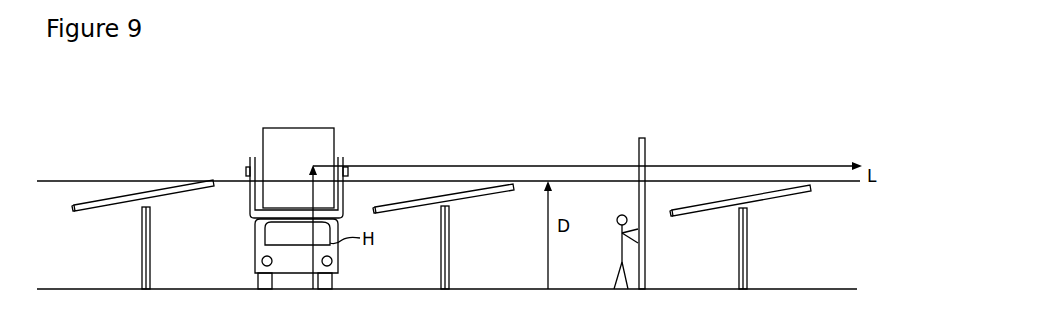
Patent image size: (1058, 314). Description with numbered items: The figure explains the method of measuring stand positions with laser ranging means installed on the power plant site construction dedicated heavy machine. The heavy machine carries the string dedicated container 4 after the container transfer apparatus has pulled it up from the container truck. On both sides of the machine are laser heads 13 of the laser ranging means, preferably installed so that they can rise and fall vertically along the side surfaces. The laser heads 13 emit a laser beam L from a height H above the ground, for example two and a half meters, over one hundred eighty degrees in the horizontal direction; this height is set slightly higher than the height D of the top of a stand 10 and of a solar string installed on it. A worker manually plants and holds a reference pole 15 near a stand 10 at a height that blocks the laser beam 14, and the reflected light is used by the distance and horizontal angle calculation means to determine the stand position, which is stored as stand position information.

The string dedicated container 4 is at (280, 126).
The stand 10 is at (110, 203).
The laser head 13 is at (247, 168).
The flight line 14 is at (428, 166).
The reference pole 15 is at (647, 143).